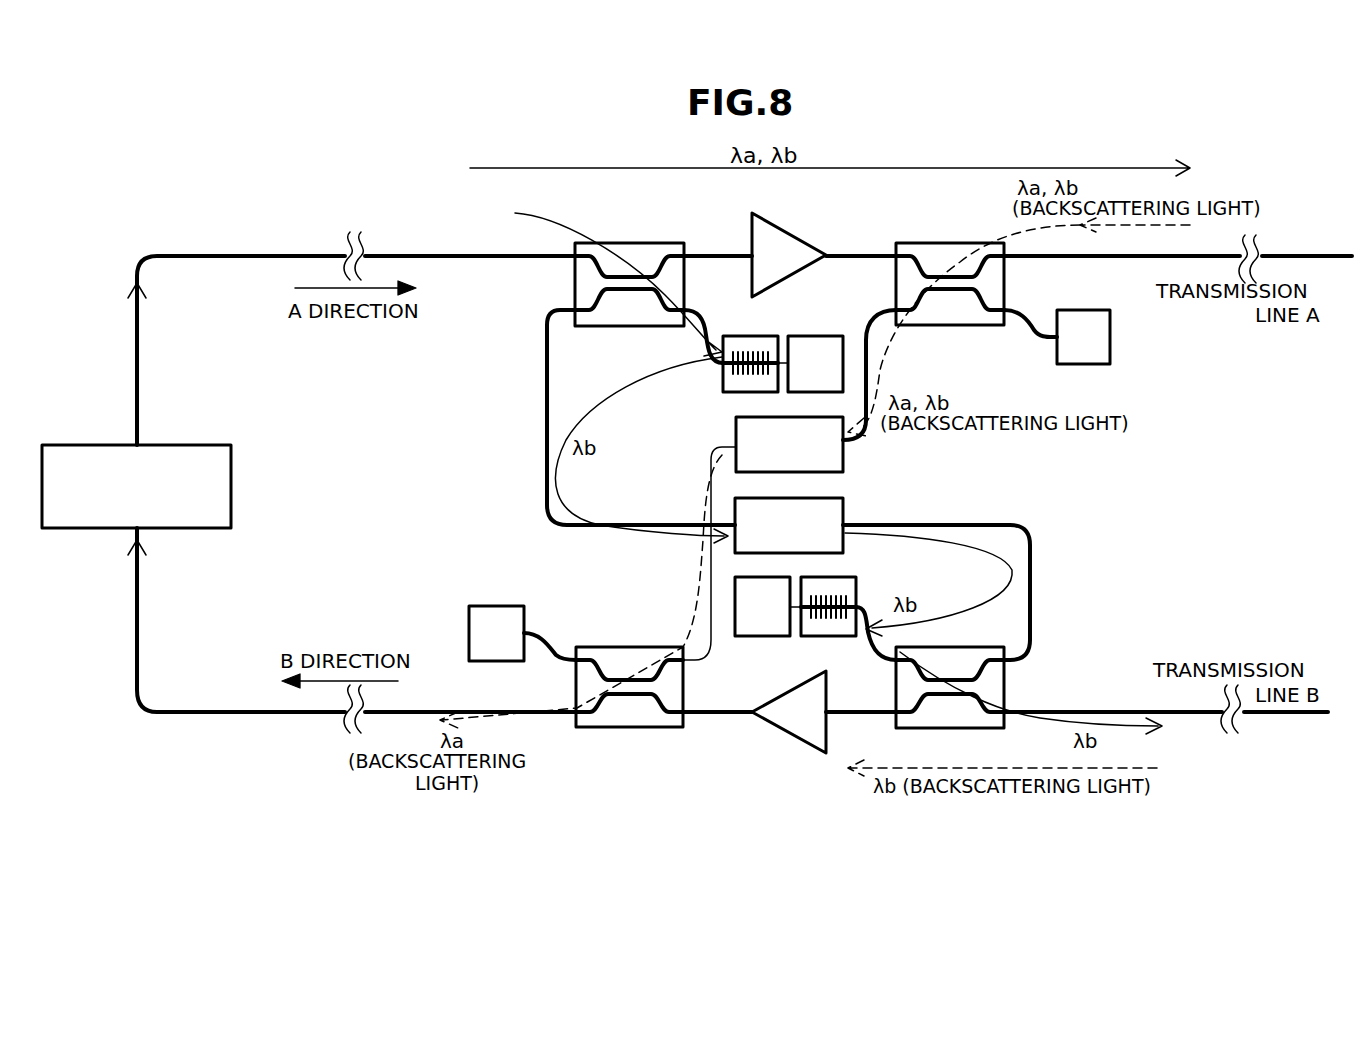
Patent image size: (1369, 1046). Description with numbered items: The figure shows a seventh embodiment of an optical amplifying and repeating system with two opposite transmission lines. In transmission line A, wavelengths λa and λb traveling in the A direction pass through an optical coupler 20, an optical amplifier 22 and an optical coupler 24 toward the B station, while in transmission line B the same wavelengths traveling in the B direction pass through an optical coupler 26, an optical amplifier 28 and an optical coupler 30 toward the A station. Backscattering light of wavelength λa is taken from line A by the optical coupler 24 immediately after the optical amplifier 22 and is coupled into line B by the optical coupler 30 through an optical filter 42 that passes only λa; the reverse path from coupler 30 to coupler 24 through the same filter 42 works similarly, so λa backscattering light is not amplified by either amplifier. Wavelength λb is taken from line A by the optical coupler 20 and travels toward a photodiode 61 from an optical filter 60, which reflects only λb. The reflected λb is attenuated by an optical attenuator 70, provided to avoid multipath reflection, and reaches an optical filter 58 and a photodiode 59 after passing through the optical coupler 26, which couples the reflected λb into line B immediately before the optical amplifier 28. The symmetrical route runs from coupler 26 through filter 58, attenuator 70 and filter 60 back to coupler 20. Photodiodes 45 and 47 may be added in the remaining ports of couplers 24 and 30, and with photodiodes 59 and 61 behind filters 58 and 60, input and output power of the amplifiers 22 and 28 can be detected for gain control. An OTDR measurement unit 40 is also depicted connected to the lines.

The optical coupler 20 is at (650, 240).
The optical amplifier 22 is at (758, 218).
The optical coupler 24 is at (1007, 287).
The optical coupler 26 is at (1007, 675).
The optical amplifier 28 is at (818, 755).
The optical coupler 30 is at (604, 644).
The OTDR measurement unit 40 is at (233, 487).
The optical filter 42 is at (845, 460).
The photodiode 45 is at (1112, 338).
The photodiode 47 is at (494, 605).
The optical filter 58 is at (850, 578).
The photodiode 59 is at (752, 636).
The optical filter 60 is at (724, 387).
The photodiode 61 is at (843, 375).
The optical attenuator 70 is at (845, 508).